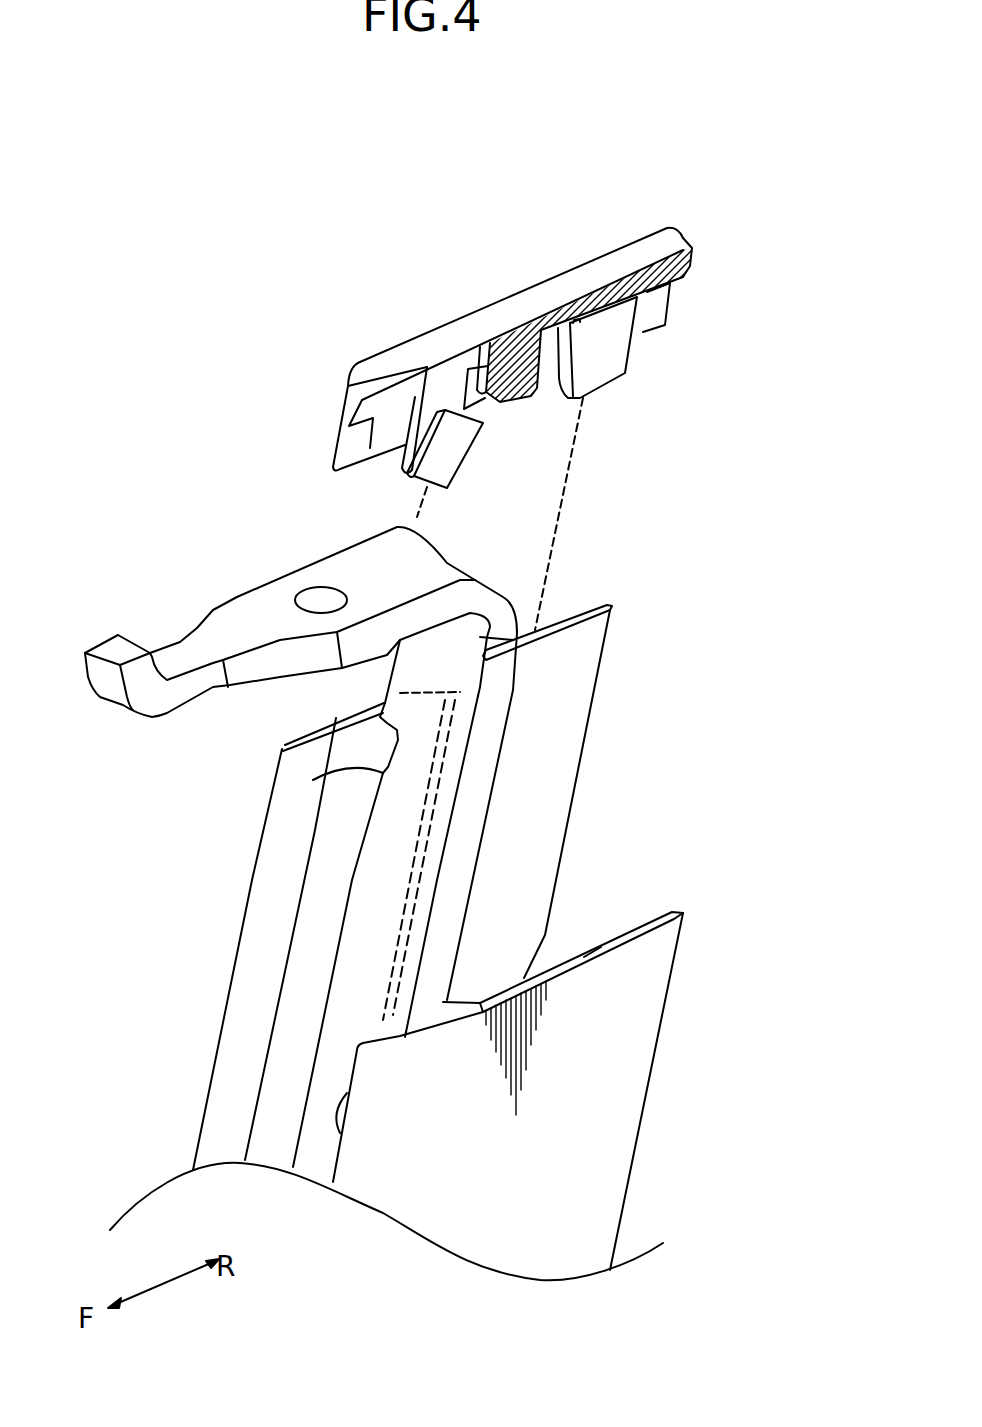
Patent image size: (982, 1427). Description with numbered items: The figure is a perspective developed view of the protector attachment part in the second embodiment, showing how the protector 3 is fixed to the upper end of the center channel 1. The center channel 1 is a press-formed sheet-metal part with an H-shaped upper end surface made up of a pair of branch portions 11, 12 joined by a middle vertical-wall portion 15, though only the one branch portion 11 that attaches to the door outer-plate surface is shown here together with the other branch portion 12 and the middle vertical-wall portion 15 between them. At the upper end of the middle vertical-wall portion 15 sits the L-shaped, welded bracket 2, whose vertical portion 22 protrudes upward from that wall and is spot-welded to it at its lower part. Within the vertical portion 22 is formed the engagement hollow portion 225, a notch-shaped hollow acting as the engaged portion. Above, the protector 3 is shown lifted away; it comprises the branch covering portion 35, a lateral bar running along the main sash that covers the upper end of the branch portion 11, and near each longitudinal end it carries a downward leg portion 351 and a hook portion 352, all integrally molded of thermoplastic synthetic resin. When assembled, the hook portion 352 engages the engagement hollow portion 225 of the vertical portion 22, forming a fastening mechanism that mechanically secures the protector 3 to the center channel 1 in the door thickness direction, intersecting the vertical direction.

The center channel 1 is at (600, 736).
The branch portion 11 is at (590, 606).
The branch portion 12 is at (683, 912).
The middle vertical-wall portion 15 is at (390, 960).
The bracket 2 is at (250, 607).
The vertical portion 22 is at (365, 888).
The engagement hollow portion 225 is at (380, 767).
The protector 3 is at (505, 270).
The branch covering portion 35 is at (628, 260).
The downward leg portion 351 is at (615, 352).
The hook portion 352 is at (398, 478).